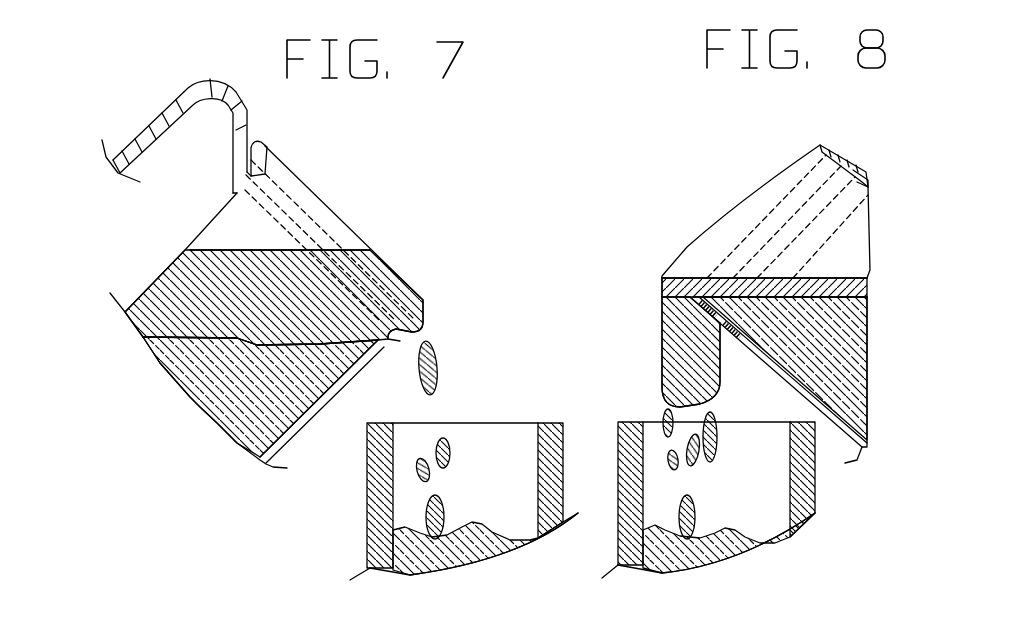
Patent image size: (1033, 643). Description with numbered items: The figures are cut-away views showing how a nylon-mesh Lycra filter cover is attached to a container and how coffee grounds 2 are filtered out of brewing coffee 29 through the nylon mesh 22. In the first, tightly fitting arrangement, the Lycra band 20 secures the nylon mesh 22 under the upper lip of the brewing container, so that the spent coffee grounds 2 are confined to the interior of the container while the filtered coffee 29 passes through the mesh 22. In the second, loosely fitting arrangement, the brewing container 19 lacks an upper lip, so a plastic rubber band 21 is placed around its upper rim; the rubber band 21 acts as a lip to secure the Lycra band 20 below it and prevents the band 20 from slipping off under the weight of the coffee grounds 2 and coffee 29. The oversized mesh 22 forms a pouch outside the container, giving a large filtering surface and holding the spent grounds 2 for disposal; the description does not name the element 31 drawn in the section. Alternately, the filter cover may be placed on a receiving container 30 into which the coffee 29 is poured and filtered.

In FIG. 7, the coffee grounds 2 is at (287, 280).
In FIG. 8, the coffee grounds 2 is at (830, 290).
In FIG. 8, the brewing container 19 is at (847, 427).
In FIG. 7, the Lycra band 20 is at (288, 200).
In FIG. 8, the Lycra band 20 is at (863, 170).
In FIG. 8, the rubber band 21 is at (840, 150).
In FIG. 7, the nylon mesh 22 is at (357, 243).
In FIG. 8, the nylon mesh 22 is at (710, 223).
In FIG. 7, the coffee 29 is at (440, 365).
In FIG. 8, the coffee 29 is at (693, 520).
In FIG. 7, the receiving container 30 is at (375, 488).
In FIG. 8, the receiving container 30 is at (812, 515).
In FIG. 7, the outlet channel 31 is at (347, 330).
In FIG. 8, the outlet channel 31 is at (840, 370).